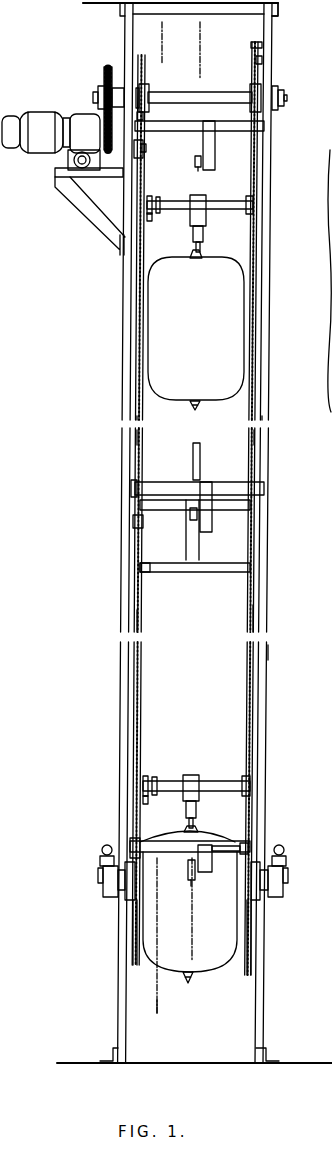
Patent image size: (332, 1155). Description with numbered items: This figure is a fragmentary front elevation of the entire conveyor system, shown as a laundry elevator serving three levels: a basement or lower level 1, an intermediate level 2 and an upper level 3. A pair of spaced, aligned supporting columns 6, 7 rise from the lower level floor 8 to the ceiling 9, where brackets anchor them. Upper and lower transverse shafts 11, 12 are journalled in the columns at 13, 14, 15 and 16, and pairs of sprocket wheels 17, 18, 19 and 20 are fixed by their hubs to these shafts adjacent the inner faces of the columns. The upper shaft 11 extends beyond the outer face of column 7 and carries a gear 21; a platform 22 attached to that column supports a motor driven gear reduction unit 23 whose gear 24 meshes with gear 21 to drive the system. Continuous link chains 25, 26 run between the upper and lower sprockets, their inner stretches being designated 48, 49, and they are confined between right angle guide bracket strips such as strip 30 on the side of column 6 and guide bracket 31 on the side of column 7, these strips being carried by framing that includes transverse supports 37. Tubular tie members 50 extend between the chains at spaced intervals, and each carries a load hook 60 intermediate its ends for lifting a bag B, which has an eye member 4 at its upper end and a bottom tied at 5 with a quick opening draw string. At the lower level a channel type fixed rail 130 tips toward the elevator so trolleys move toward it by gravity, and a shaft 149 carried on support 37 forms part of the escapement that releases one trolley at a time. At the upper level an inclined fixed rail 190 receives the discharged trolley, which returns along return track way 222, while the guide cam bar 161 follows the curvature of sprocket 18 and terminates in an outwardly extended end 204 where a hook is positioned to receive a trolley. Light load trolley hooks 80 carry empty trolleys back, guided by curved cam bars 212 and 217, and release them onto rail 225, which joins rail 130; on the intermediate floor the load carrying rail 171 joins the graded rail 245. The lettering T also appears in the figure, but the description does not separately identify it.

The lower level 1 is at (295, 960).
The intermediate level 2 is at (200, 30).
The upper level 3 is at (293, 175).
The eye member 4 is at (202, 254).
The bag bottom tie 5 is at (202, 405).
The column 6 is at (270, 662).
The column 7 is at (133, 29).
The lower level floor 8 is at (80, 1062).
The ceiling 9 is at (283, 5).
The upper transverse shaft 11 is at (214, 100).
The lower transverse shaft 12 is at (140, 888).
The journal 13 is at (278, 86).
The journal 14 is at (124, 82).
The journal 15 is at (276, 896).
The journal 16 is at (115, 896).
The sprocket wheel 17 is at (141, 66).
The sprocket wheel 18 is at (262, 60).
The sprocket wheel 19 is at (135, 918).
The sprocket wheel 20 is at (258, 920).
The gear 21 is at (107, 67).
The platform 22 is at (68, 195).
The motor driven gear reduction unit 23 is at (70, 146).
The gear 24 is at (92, 161).
The link chain 25 is at (142, 422).
The link chain 26 is at (258, 420).
The right angle bracket strip 30 is at (251, 612).
The guide bracket 31 is at (141, 620).
The transverse support 37 is at (230, 131).
The inner chain stretch 48 is at (141, 447).
The inner chain stretch 49 is at (253, 443).
The tubular tie member 50 is at (232, 209).
The load hook 60 is at (206, 215).
The light load trolley hook 80 is at (152, 216).
The fixed rail 130 is at (192, 872).
The shaft 149 is at (223, 851).
The guide cam bar 161 is at (251, 47).
The load carrying rail 171 is at (195, 522).
The fixed rail 190 is at (197, 167).
The outwardly extended end 204 is at (242, 948).
The curved cam bar 212 is at (143, 118).
The outer curved cam bar 217 is at (133, 945).
The return track way 222 is at (146, 148).
The rail 225 is at (145, 845).
The rail 245 is at (143, 522).
The bag B is at (205, 333).
The bag top T is at (146, 163).